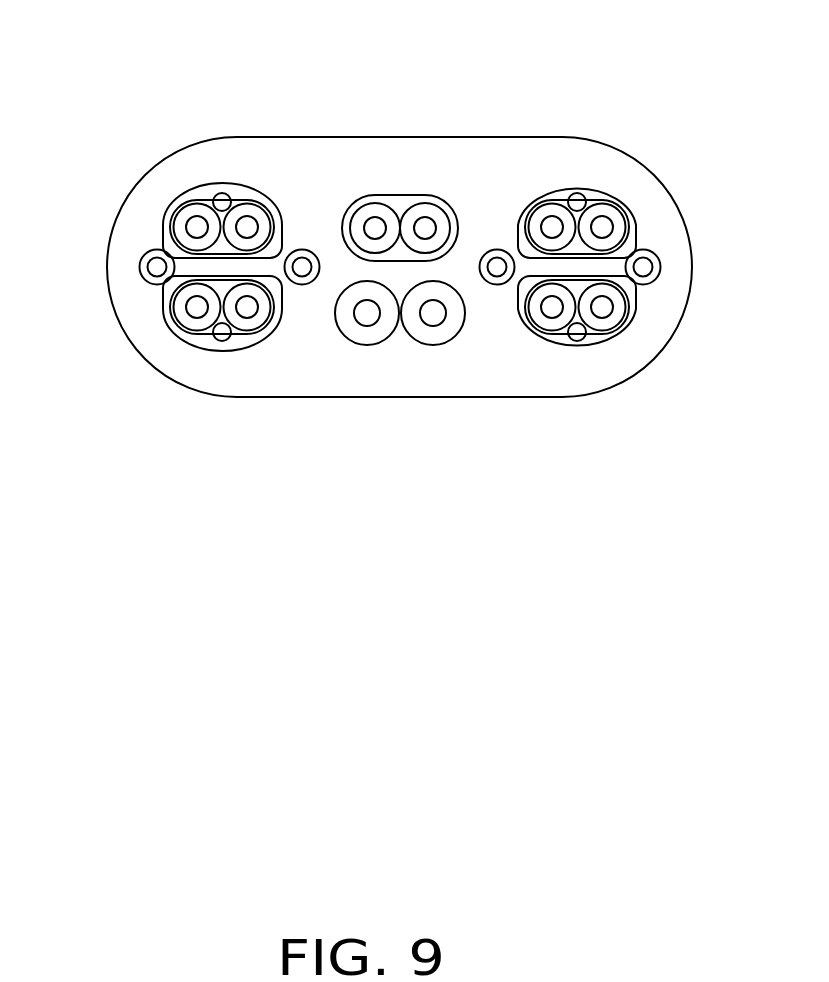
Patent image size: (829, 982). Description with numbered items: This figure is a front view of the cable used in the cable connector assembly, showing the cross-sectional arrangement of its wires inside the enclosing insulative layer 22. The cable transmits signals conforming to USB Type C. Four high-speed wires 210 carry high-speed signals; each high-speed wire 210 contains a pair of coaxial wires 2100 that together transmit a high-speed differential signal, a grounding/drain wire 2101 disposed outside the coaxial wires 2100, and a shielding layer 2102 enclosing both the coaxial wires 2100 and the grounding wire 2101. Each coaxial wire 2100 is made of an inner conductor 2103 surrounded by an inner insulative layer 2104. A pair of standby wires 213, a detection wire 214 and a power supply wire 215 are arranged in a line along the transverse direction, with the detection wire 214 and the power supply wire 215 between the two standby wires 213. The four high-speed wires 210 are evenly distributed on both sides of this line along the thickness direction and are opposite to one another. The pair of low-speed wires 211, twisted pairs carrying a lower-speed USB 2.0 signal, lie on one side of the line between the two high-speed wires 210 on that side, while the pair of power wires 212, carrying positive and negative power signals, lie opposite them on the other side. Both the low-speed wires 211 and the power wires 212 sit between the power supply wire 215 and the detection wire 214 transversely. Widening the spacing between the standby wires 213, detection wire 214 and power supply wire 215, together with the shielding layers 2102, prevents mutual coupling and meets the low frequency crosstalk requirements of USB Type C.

The insulative layer 22 is at (372, 397).
The high-speed wire 210 is at (399, 295).
The coaxial wire 2100 is at (550, 322).
The grounding/drain wire 2101 is at (580, 330).
The shielding layer 2102 is at (592, 328).
The inner conductor 2103 is at (603, 218).
The inner insulative layer 2104 is at (618, 232).
The low-speed wire 211 is at (400, 195).
The power wire 212 is at (340, 327).
The standby wire 213 is at (147, 268).
The detection wire 214 is at (302, 249).
The power supply wire 215 is at (497, 249).